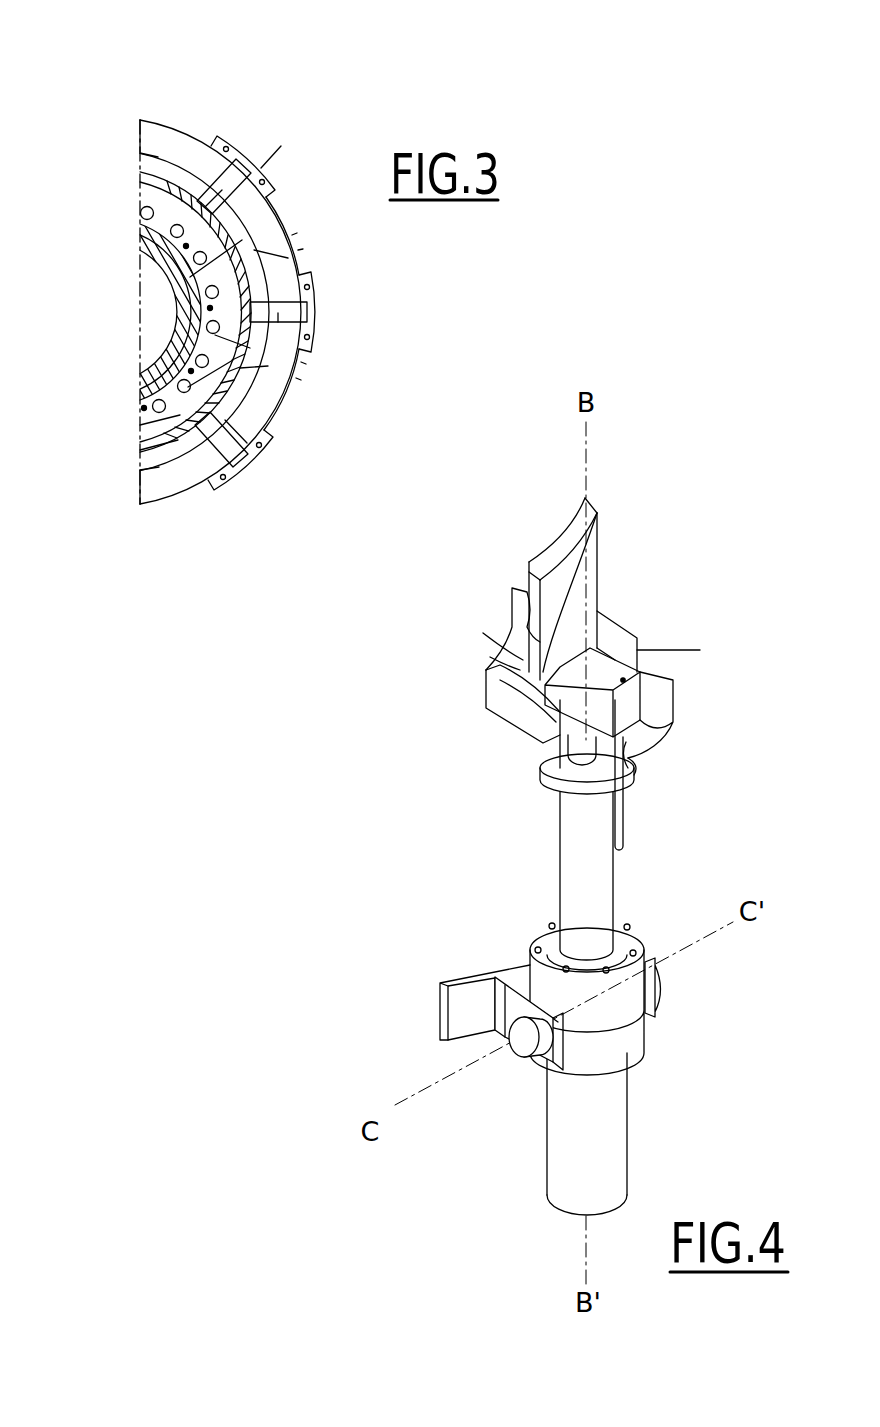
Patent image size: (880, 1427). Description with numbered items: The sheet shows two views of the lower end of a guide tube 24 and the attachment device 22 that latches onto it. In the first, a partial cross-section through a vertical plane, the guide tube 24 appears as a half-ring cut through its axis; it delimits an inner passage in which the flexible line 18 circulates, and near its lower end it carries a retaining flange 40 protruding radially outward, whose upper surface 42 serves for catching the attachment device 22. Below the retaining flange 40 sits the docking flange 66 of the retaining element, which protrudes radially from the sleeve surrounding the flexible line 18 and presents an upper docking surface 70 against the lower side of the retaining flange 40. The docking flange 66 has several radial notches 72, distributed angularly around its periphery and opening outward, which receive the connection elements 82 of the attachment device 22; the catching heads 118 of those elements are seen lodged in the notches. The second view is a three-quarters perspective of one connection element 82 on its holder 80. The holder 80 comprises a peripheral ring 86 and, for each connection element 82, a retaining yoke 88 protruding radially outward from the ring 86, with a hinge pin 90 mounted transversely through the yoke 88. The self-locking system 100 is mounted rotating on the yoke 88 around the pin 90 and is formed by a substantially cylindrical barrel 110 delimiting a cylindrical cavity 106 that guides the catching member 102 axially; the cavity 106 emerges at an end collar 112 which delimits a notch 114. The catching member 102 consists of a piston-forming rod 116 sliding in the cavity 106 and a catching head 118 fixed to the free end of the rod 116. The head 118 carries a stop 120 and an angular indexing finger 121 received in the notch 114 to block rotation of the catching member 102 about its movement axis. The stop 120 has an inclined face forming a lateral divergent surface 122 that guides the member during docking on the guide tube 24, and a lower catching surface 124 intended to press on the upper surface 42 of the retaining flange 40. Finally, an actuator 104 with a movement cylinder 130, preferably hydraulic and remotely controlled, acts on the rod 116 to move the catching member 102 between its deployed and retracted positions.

In FIG. 3, the flexible line 18 is at (155, 322).
In FIG. 3, the attachment device 22 is at (181, 106).
In FIG. 4, the attachment device 22 is at (713, 530).
In FIG. 3, the guide tube 24 is at (138, 432).
In FIG. 4, the guide tube 24 is at (566, 512).
In FIG. 3, the retaining flange 40 is at (173, 470).
In FIG. 4, the retaining flange 40 is at (635, 662).
In FIG. 3, the upper surface 42 is at (245, 378).
In FIG. 4, the upper surface 42 is at (612, 645).
In FIG. 3, the docking flange 66 is at (303, 262).
In FIG. 4, the docking flange 66 is at (487, 692).
In FIG. 3, the upper docking surface 70 is at (258, 214).
In FIG. 4, the upper docking surface 70 is at (508, 666).
In FIG. 3, the radial notches 72 is at (220, 156).
In FIG. 4, the holder 80 is at (405, 981).
In FIG. 3, the connection elements 82 is at (268, 156).
In FIG. 4, the connection elements 82 is at (753, 829).
In FIG. 4, the peripheral ring 86 is at (424, 1012).
In FIG. 4, the retaining yoke 88 is at (500, 1027).
In FIG. 4, the hinge pin 90 is at (527, 1045).
In FIG. 4, the self-locking system 100 is at (655, 932).
In FIG. 4, the catching member 102 is at (540, 746).
In FIG. 4, the actuator 104 is at (632, 1150).
In FIG. 4, the cylindrical cavity 106 is at (560, 782).
In FIG. 4, the barrel 110 is at (597, 881).
In FIG. 4, the end collar 112 is at (630, 772).
In FIG. 4, the notch 114 is at (621, 808).
In FIG. 4, the piston-forming rod 116 is at (583, 738).
In FIG. 3, the catching head 118 is at (183, 210).
In FIG. 4, the catching head 118 is at (636, 668).
In FIG. 4, the stop 120 is at (670, 705).
In FIG. 4, the angular indexing finger 121 is at (626, 748).
In FIG. 4, the lateral divergent surface 122 is at (552, 620).
In FIG. 4, the lower catching surface 124 is at (490, 670).
In FIG. 4, the movement cylinder 130 is at (575, 1148).